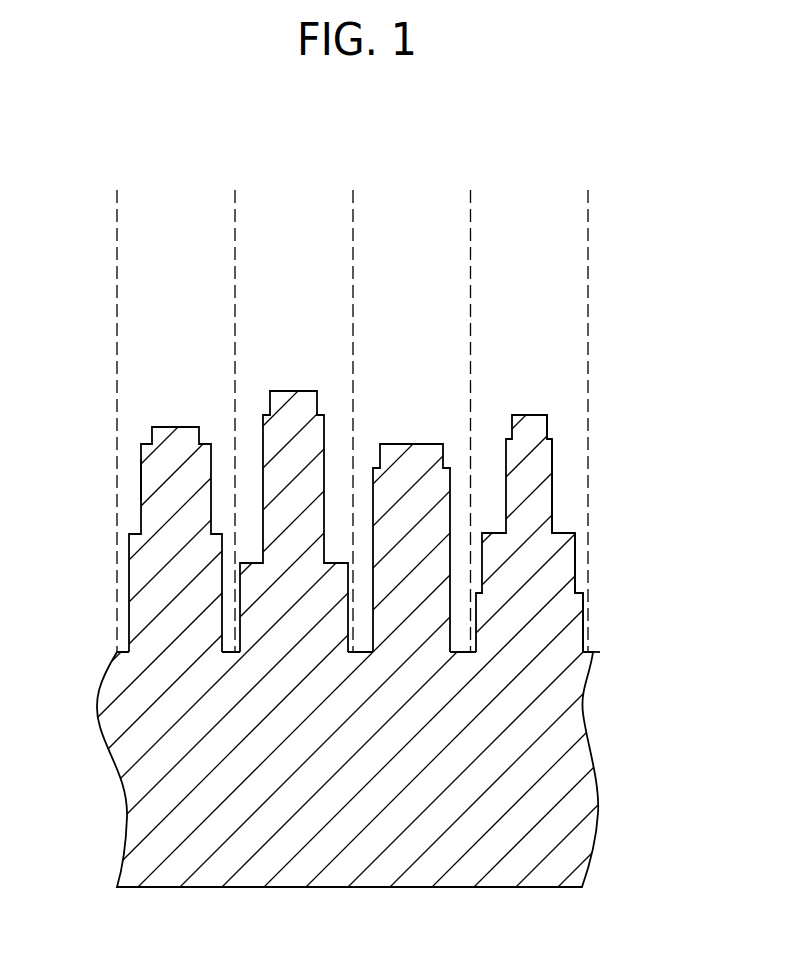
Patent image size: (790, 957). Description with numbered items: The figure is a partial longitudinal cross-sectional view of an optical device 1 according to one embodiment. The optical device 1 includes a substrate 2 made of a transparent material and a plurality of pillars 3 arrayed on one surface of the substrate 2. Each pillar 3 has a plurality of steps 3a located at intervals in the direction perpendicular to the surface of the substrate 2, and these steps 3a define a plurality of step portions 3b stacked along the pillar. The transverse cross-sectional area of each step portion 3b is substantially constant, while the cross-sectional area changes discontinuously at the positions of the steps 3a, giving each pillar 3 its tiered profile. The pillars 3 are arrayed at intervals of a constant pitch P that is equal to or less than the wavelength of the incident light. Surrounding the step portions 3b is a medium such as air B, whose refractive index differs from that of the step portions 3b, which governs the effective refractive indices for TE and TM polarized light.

The optical device 1 is at (676, 358).
The substrate 2 is at (577, 758).
The pillar 3 is at (181, 393).
The step 3a is at (553, 437).
The step portion 3b is at (547, 418).
The air B is at (127, 491).
The pitch P is at (588, 222).